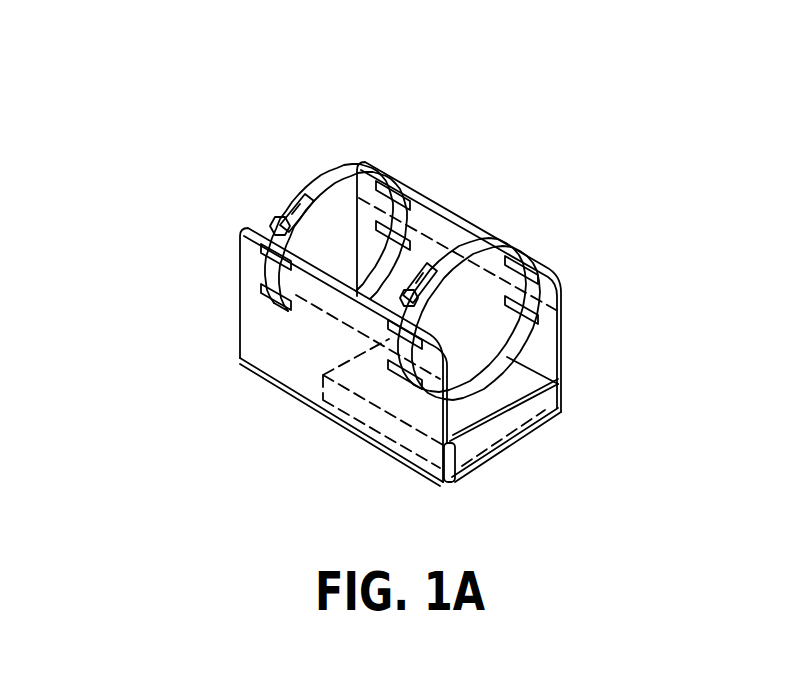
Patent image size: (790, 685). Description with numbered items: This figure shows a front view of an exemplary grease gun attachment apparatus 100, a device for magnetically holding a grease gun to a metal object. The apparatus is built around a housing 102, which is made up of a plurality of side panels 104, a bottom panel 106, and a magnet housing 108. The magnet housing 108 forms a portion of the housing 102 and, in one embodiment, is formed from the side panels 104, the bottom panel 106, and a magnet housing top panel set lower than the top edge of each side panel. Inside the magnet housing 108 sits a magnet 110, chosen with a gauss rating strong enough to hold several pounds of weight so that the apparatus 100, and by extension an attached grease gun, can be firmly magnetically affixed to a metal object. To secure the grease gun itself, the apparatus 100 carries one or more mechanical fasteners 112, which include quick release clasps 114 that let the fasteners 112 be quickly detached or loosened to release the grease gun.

The grease gun attachment apparatus 100 is at (549, 44).
The housing 102 is at (577, 372).
The side panels 104 is at (240, 322).
The bottom panel 106 is at (374, 450).
The magnet housing 108 is at (548, 412).
The magnet 110 is at (333, 403).
The mechanical fasteners 112 is at (345, 167).
The quick release clasps 114 is at (288, 200).